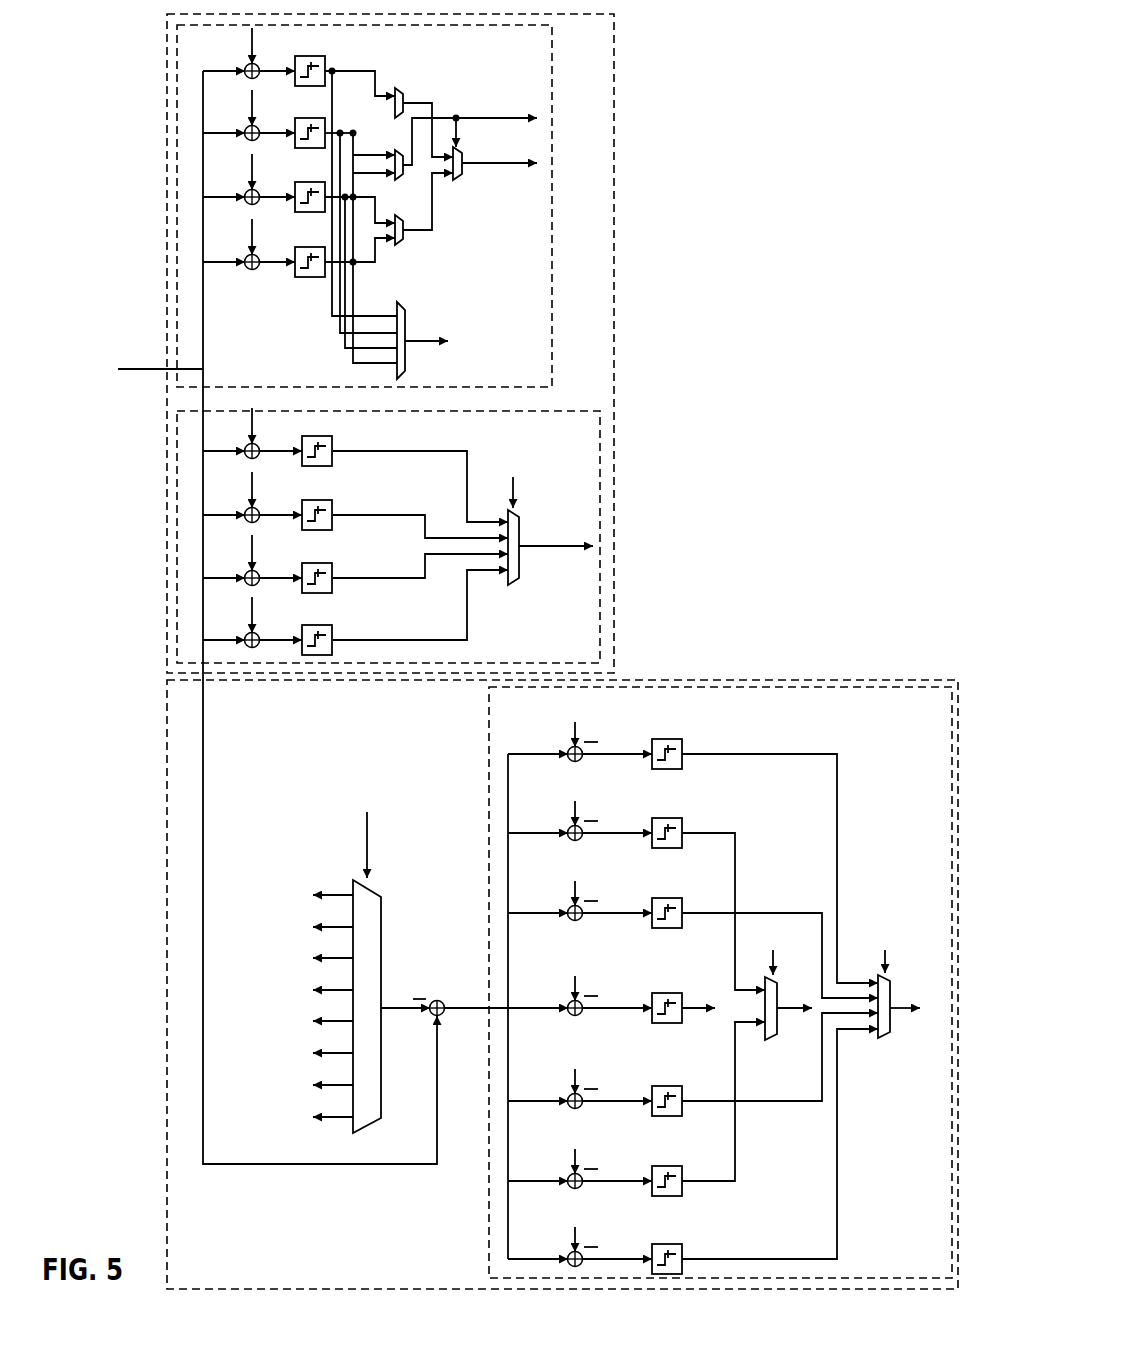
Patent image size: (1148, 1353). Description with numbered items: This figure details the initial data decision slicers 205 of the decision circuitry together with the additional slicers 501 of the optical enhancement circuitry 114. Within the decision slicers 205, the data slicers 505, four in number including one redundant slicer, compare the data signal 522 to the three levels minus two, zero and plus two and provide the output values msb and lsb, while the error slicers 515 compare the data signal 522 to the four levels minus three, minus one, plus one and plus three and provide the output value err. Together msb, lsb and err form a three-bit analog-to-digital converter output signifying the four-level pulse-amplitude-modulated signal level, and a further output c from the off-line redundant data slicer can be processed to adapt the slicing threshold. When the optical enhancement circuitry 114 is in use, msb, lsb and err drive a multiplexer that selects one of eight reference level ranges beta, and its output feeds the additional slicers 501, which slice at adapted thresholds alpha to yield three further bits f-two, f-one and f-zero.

The optical enhancement circuitry 114 is at (890, 681).
The initial data decision slicers 205 is at (614, 185).
The data slicers 505 is at (552, 172).
The error slicers 515 is at (600, 452).
The additional slicers 501 is at (952, 747).
The data signal 522 is at (143, 370).